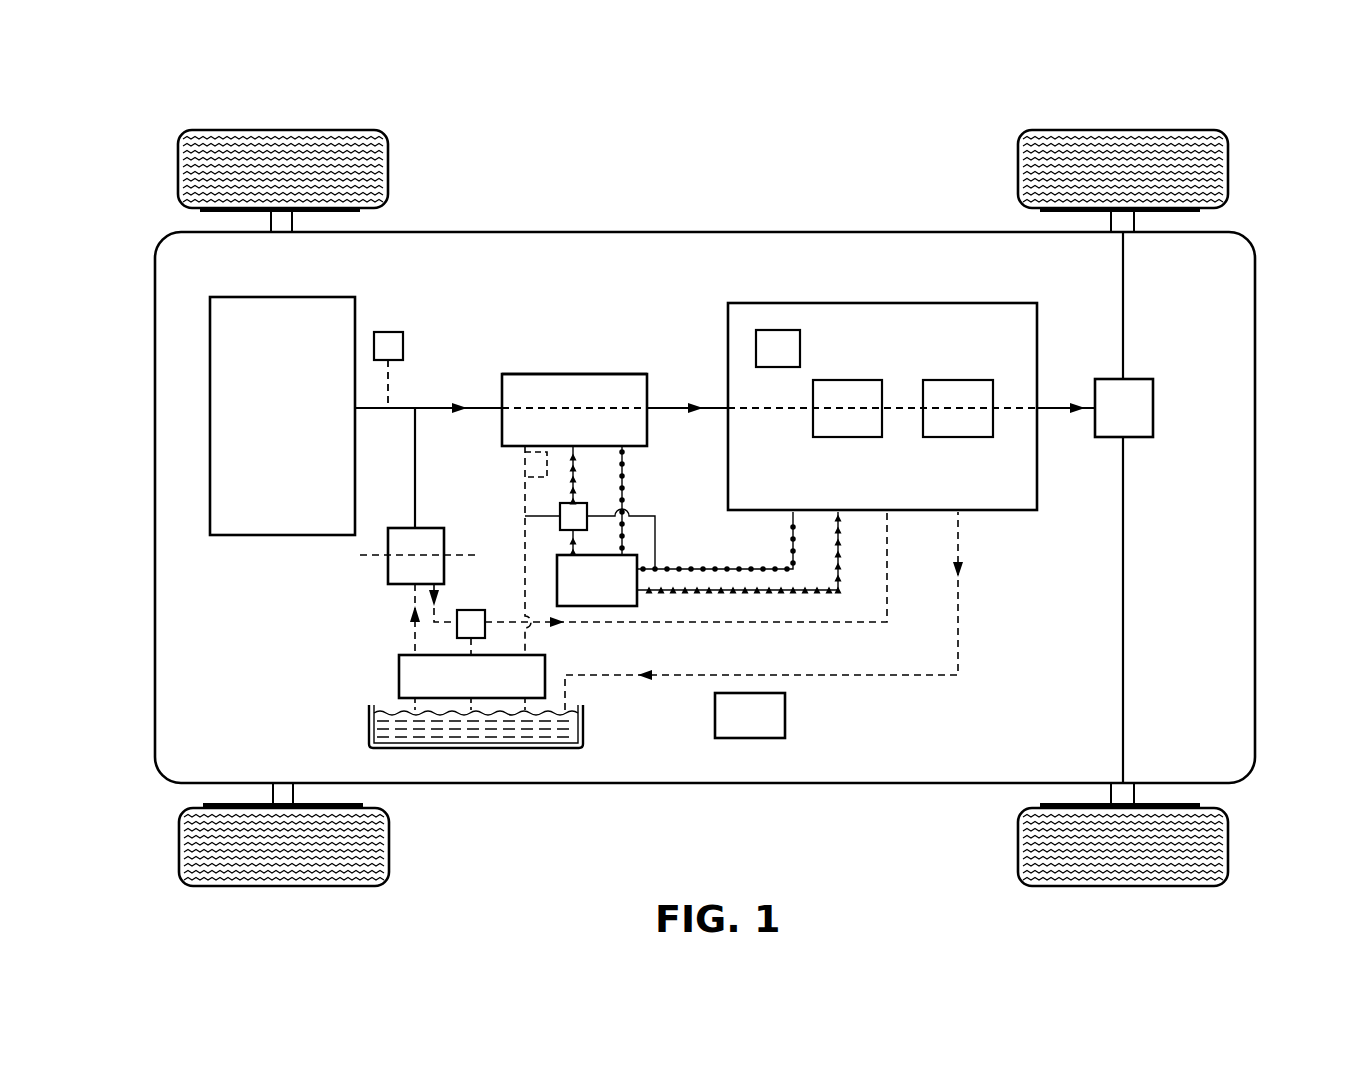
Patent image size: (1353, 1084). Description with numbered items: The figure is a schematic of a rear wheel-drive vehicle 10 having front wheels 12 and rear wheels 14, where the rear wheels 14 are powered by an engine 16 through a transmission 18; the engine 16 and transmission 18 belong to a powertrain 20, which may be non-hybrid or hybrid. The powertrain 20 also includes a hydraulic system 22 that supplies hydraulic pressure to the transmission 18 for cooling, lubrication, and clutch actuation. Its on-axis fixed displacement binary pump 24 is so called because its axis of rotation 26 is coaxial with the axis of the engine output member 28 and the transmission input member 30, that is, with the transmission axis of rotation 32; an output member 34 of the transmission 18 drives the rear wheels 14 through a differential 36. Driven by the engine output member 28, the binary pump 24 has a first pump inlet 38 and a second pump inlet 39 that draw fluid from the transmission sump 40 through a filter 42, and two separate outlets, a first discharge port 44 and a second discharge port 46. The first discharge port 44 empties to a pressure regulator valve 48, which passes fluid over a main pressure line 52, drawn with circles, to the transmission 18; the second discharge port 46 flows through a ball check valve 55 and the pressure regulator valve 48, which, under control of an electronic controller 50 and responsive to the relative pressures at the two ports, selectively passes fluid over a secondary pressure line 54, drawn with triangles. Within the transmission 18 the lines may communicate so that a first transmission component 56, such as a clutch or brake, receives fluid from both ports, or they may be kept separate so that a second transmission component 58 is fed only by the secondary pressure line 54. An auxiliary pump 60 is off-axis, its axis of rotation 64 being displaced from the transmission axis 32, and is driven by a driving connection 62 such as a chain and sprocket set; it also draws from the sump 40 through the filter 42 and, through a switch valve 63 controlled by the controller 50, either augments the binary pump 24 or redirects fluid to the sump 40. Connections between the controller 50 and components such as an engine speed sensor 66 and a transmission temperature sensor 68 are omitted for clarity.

The vehicle 10 is at (795, 152).
The front wheels 12 is at (177, 166).
The rear wheels 14 is at (1230, 170).
The engine 16 is at (312, 297).
The transmission 18 is at (968, 303).
The powertrain 20 is at (627, 348).
The hydraulic system 22 is at (566, 355).
The on-axis fixed displacement binary pump 24 is at (530, 374).
The axis of rotation of the binary pump 26 is at (628, 408).
The engine output member 28 is at (398, 415).
The transmission input member 30 is at (712, 410).
The transmission axis of rotation 32 is at (773, 410).
The output member 34 is at (1055, 410).
The differential 36 is at (1153, 410).
The first pump inlet 38 is at (525, 495).
The second pump inlet 39 is at (525, 462).
The transmission sump 40 is at (369, 716).
The filter 42 is at (399, 666).
The first discharge port 44 is at (626, 452).
The second discharge port 46 is at (576, 452).
The pressure regulator valve 48 is at (597, 580).
The electronic controller 50 is at (785, 722).
The main pressure line 52 is at (735, 572).
The secondary pressure line 54 is at (800, 593).
The ball check valve 55 is at (560, 518).
The first transmission component 56 is at (848, 380).
The second transmission component 58 is at (955, 380).
The auxiliary pump 60 is at (388, 548).
The driving connection 62 is at (415, 425).
The switch valve 63 is at (470, 610).
The axis of rotation of the auxiliary pump 64 is at (360, 557).
The engine speed sensor 66 is at (390, 332).
The transmission temperature sensor 68 is at (790, 330).